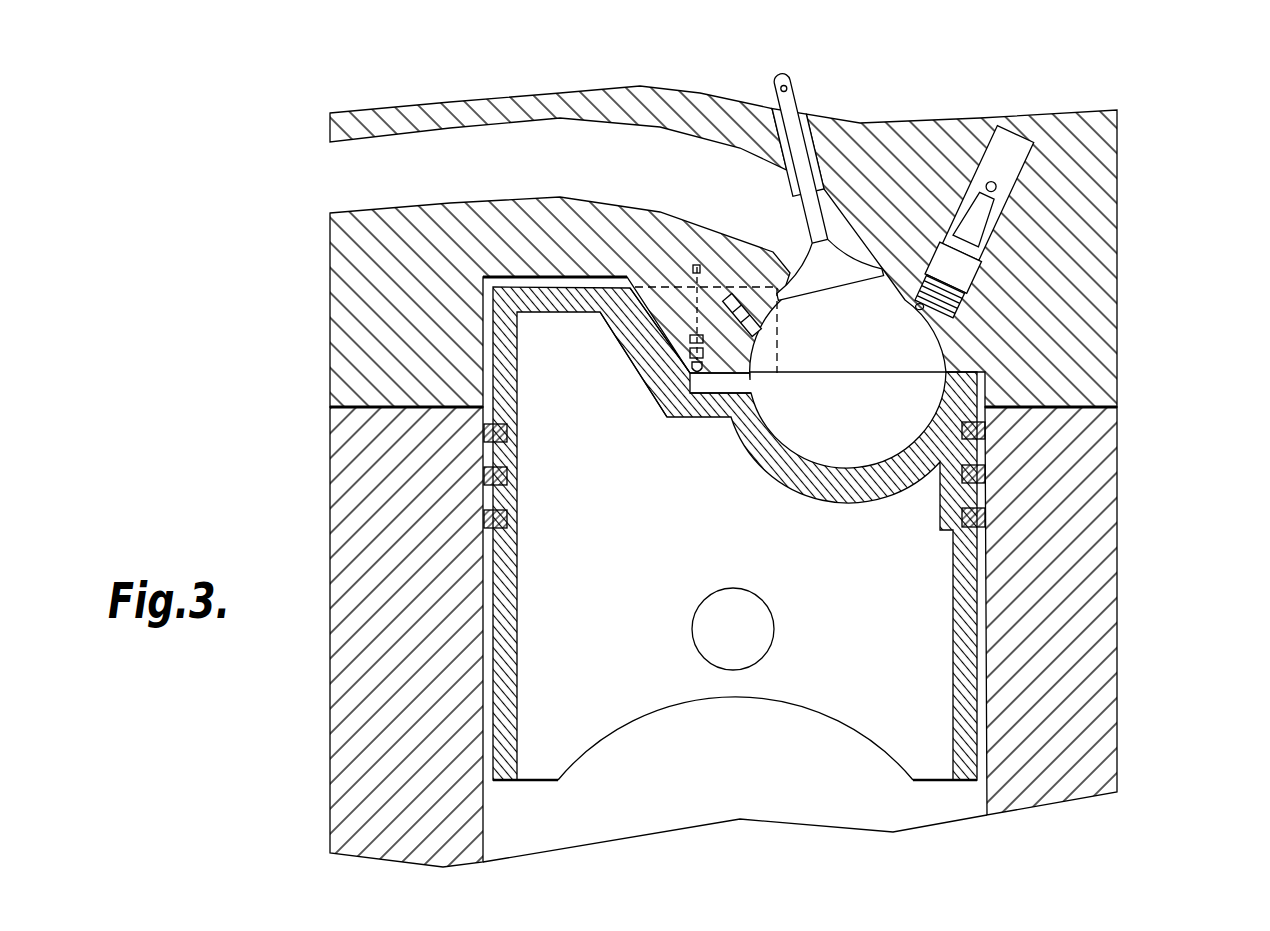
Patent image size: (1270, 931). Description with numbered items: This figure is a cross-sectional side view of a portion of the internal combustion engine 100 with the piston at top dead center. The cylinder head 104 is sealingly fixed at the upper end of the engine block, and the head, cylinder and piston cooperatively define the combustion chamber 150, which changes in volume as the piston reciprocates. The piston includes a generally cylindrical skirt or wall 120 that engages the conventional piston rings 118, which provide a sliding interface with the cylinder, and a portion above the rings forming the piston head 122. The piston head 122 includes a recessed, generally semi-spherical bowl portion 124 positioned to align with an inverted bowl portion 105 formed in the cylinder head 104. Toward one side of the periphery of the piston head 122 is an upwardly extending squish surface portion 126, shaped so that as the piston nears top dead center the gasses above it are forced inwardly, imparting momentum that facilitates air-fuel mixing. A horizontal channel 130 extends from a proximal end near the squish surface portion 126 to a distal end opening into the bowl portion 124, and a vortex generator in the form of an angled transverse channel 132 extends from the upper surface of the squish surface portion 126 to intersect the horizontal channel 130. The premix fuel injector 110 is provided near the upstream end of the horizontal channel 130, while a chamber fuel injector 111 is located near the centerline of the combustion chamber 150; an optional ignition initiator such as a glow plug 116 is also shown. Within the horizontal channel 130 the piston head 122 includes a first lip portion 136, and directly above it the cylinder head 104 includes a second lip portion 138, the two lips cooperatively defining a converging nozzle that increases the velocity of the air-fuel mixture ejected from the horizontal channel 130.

The internal combustion engine 100 is at (240, 131).
The cylinder head 104 is at (1080, 255).
The inverted bowl portion 105 is at (960, 345).
The premix fuel injector 110 is at (697, 267).
The chamber fuel injector 111 is at (733, 297).
The glow plug 116 is at (1018, 128).
The piston rings 118 is at (982, 512).
The skirt or wall 120 is at (980, 655).
The piston head 122 is at (493, 357).
The recessed bowl portion 124 is at (962, 395).
The squish surface portion 126 is at (517, 288).
The horizontal channel 130 is at (700, 418).
The transverse channel 132 is at (673, 358).
The first lip portion 136 is at (750, 395).
The second lip portion 138 is at (752, 376).
The combustion chamber 150 is at (892, 272).